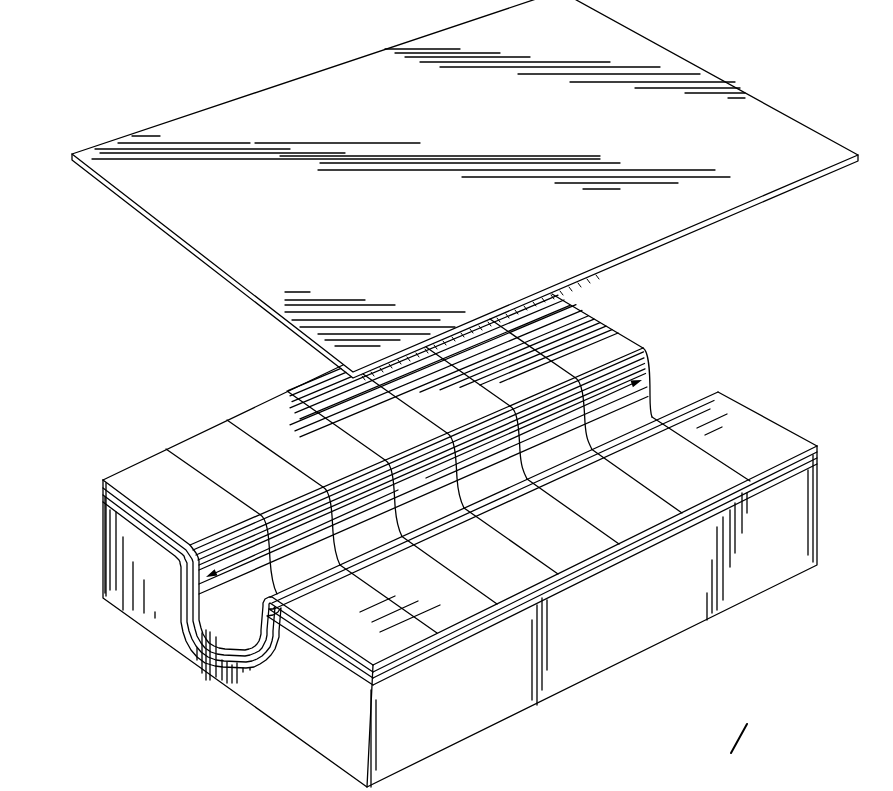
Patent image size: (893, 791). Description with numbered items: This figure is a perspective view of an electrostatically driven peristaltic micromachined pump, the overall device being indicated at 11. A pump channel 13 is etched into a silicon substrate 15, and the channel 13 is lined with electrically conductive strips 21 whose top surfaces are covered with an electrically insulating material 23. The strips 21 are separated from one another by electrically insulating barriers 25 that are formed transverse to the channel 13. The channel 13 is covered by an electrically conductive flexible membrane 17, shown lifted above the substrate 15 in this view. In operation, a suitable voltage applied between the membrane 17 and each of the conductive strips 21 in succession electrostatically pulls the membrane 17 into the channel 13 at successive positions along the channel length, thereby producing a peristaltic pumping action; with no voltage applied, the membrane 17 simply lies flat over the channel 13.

The sample cell assembly 11 is at (16, 365).
The pump channel 13 is at (207, 620).
The silicon substrate 15 is at (735, 572).
The electrically conductive flexible membrane 17 is at (742, 76).
The electrically conductive strips 21 is at (103, 495).
The electrically insulating material 23 is at (147, 477).
The electrically insulating barriers 25 is at (234, 431).